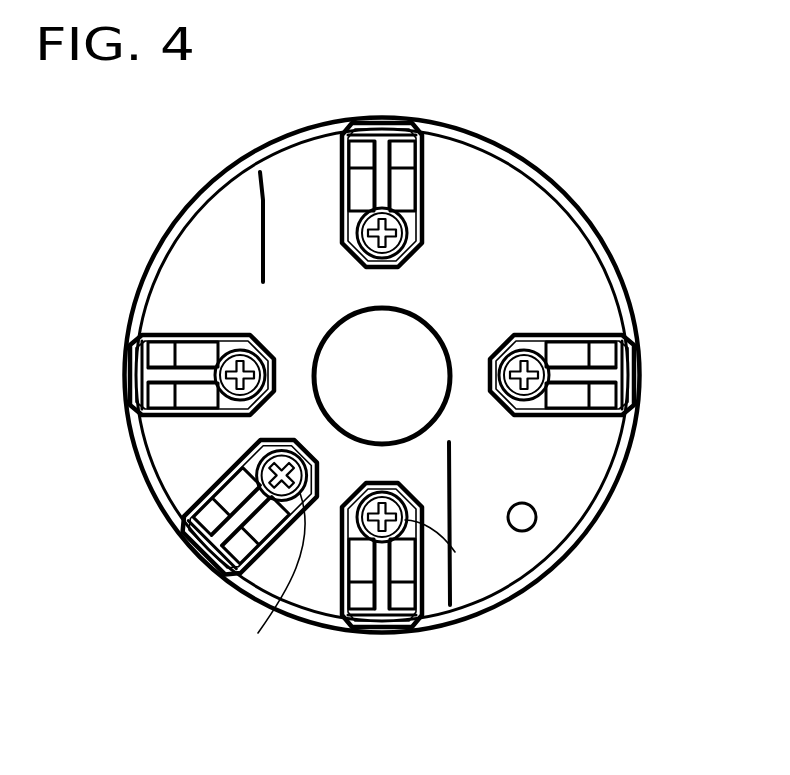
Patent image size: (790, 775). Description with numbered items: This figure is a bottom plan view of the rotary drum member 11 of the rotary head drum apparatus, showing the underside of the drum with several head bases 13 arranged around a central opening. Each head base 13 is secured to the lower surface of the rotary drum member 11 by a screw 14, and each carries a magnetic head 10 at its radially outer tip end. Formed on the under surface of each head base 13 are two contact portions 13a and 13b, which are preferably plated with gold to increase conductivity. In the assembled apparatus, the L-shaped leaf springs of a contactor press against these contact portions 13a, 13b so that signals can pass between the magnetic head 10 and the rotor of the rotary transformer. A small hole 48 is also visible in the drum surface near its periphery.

The magnetic head 10 is at (382, 118).
The rotary drum member 11 is at (500, 182).
The head base 13 is at (347, 231).
The contact portion 13a is at (407, 192).
The contact portion 13b is at (355, 190).
The screw 14 is at (258, 633).
The positioning hole 48 is at (537, 521).